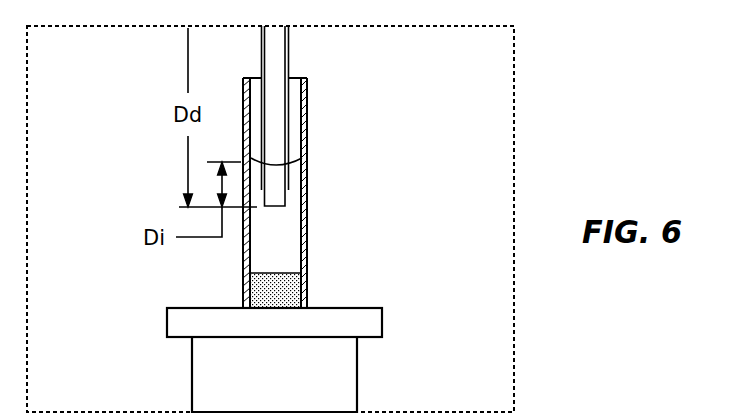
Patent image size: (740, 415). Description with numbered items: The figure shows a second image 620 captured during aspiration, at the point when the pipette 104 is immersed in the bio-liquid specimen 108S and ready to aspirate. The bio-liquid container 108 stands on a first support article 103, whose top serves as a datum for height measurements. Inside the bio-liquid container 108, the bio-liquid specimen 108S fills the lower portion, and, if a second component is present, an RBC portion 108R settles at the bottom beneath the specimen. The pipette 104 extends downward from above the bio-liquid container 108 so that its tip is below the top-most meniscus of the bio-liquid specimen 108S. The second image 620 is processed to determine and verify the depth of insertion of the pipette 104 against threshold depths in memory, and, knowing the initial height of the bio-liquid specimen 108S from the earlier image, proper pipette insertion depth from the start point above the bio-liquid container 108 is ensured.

The second image 620 is at (466, 26).
The first support article 103 is at (232, 380).
The pipette 104 is at (290, 53).
The bio-liquid container 108 is at (309, 112).
The bio-liquid specimen 108S is at (278, 233).
The RBC portion 108R is at (272, 297).